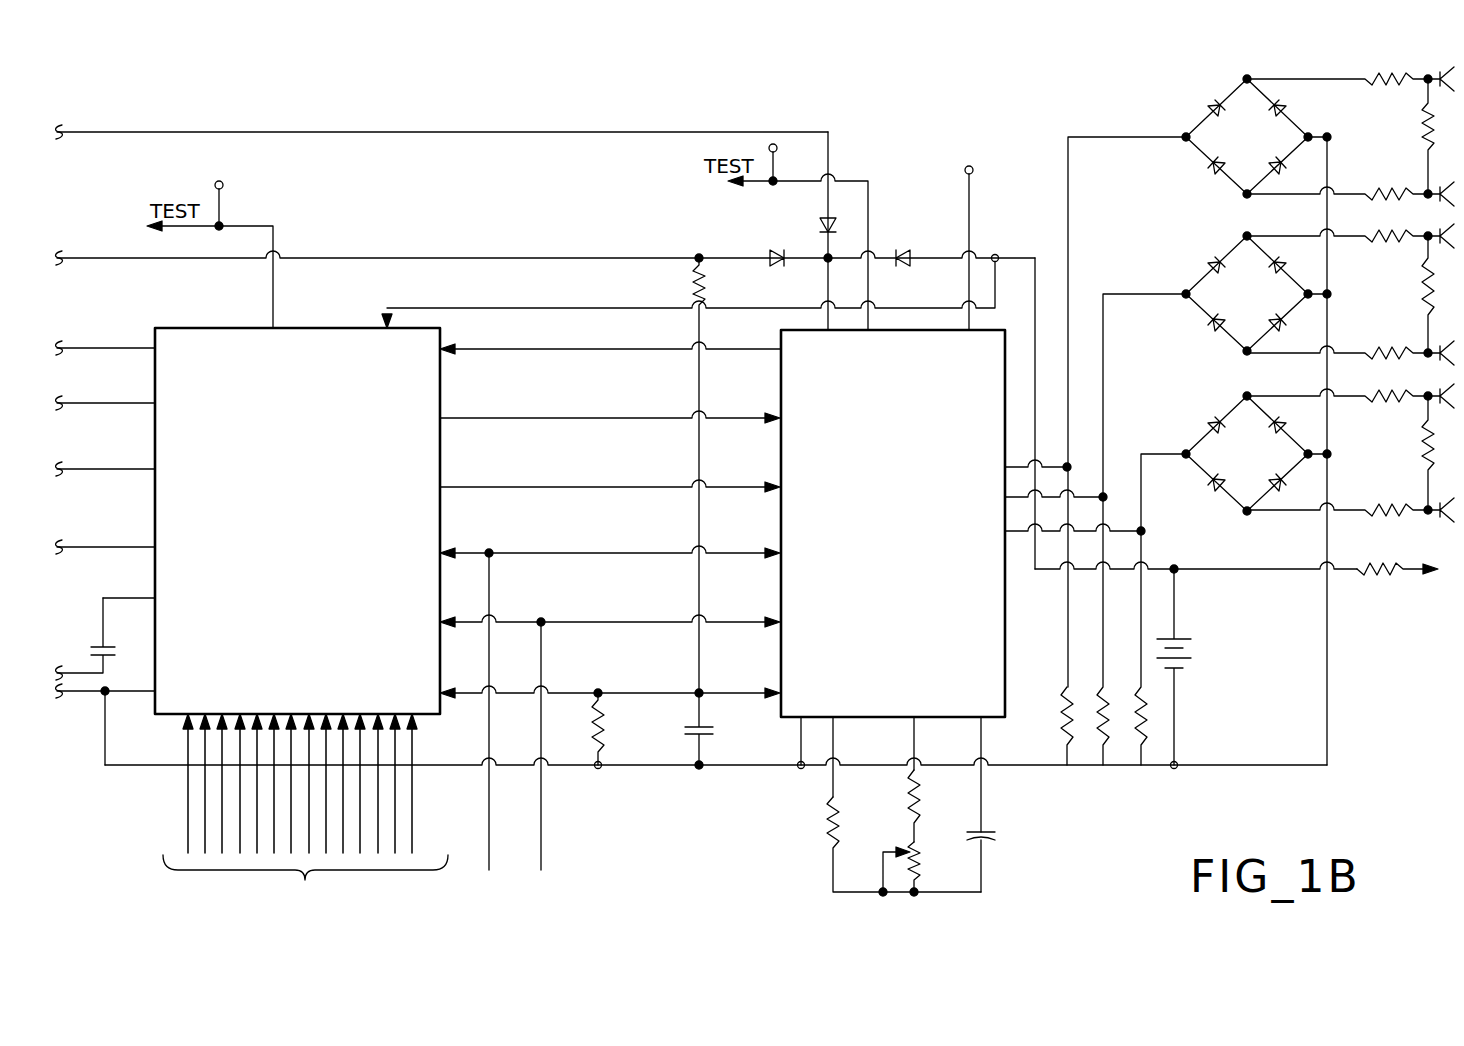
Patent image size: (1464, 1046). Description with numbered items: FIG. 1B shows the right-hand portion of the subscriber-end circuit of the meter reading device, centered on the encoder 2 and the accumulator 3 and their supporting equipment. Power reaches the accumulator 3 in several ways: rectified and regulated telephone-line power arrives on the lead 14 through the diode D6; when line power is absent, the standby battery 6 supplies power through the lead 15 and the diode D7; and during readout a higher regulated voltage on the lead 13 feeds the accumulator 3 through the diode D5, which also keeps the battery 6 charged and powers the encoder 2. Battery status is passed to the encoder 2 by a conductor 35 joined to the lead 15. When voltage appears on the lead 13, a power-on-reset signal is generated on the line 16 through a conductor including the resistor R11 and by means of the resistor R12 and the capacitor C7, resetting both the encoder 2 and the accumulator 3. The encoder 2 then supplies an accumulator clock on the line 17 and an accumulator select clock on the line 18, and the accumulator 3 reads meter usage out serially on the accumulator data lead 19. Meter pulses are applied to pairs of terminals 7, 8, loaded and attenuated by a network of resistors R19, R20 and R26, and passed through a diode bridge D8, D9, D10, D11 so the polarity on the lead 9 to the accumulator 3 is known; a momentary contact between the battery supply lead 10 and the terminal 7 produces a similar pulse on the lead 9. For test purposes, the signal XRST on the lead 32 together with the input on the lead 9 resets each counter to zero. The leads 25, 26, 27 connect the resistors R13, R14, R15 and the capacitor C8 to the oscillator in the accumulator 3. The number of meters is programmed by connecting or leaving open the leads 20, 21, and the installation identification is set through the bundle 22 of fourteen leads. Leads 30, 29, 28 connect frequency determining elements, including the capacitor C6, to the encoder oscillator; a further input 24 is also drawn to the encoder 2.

The lead 14 is at (88, 131).
The lead 13 is at (78, 256).
The encoder 2 is at (300, 327).
The conductor 35 is at (528, 308).
The accumulator data lead 19 is at (535, 351).
The line 17 is at (563, 420).
The line 18 is at (545, 489).
The input line 24 is at (72, 402).
The lead 30 is at (75, 468).
The lead 29 is at (80, 546).
The lead 28 is at (103, 598).
The capacitor C6 is at (96, 645).
The bundle of leads 22 is at (305, 814).
The lead 21 is at (489, 813).
The lead 20 is at (541, 840).
The line 16 is at (668, 695).
The resistor R12 is at (575, 729).
The capacitor C7 is at (716, 733).
The resistor R11 is at (692, 280).
The diode D5 is at (770, 264).
The diode D6 is at (819, 222).
The diode D7 is at (905, 250).
The lead 32 is at (972, 222).
The accumulator 3 is at (1006, 632).
The lead 27 is at (835, 739).
The lead 26 is at (916, 739).
The lead 25 is at (983, 739).
The resistor R13 is at (826, 822).
The resistor R14 is at (908, 796).
The resistor R15 is at (920, 842).
The capacitor C8 is at (986, 831).
The lead 9 is at (1068, 136).
The lead 15 is at (1154, 567).
The standby battery 6 is at (1188, 654).
The battery supply lead 10 is at (1408, 572).
The diode D8 is at (1216, 100).
The diode D9 is at (1282, 102).
The diode D10 is at (1212, 178).
The diode D11 is at (1287, 158).
The resistor R19 is at (1400, 75).
The resistor R26 is at (1420, 122).
The resistor R20 is at (1390, 188).
The terminal 7 is at (1436, 72).
The terminal 8 is at (1438, 200).